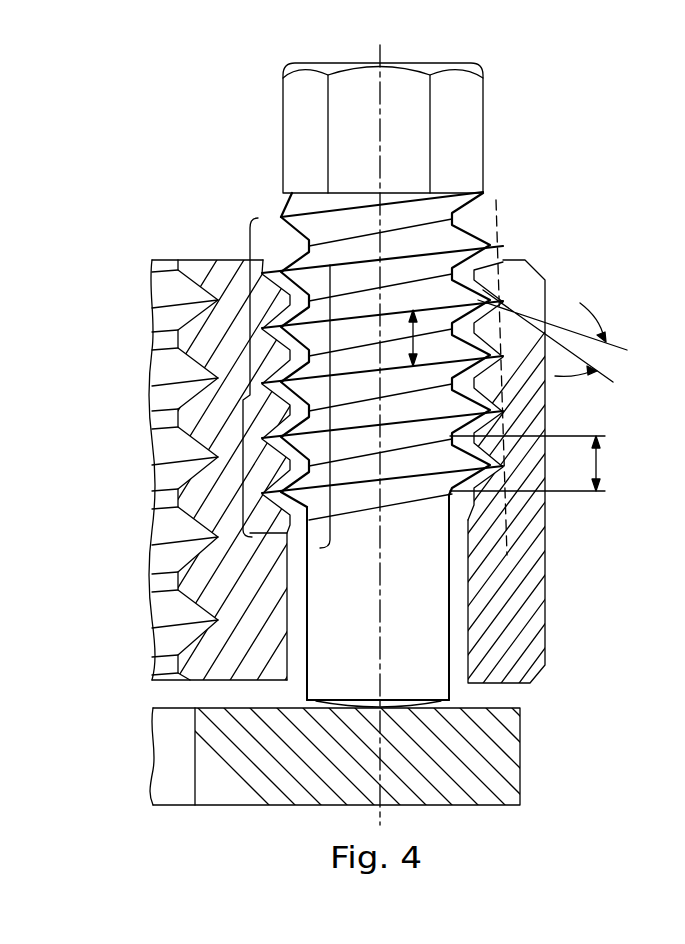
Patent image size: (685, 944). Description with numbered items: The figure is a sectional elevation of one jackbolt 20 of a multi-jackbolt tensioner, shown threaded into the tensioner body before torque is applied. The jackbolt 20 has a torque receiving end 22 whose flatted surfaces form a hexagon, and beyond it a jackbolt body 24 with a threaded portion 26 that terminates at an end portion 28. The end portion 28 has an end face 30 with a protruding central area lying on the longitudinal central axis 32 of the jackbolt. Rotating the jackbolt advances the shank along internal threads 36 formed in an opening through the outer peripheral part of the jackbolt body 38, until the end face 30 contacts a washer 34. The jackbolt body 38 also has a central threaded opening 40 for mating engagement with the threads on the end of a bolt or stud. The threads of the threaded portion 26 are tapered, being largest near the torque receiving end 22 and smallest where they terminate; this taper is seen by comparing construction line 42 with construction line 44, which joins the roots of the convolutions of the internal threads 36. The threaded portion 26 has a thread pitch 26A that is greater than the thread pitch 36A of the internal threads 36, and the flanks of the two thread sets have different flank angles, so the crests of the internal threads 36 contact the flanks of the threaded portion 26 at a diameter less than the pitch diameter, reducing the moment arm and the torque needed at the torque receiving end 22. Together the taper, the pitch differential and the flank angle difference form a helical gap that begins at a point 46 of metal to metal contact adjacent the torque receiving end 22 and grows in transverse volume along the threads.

The jackbolt 20 is at (451, 374).
The torque receiving end 22 is at (478, 128).
The jackbolt body 24 is at (433, 547).
The threaded portion 26 is at (200, 433).
The thread pitch 26A is at (409, 322).
The end portion 28 is at (358, 665).
The end face 30 is at (450, 704).
The longitudinal central axis 32 is at (376, 613).
The washer 34 is at (508, 772).
The internal threads 36 is at (313, 410).
The thread pitch 36A is at (597, 492).
The jackbolt body 38 is at (482, 441).
The central threaded opening 40 is at (287, 449).
The construction line 42 is at (497, 216).
The construction line 44 is at (505, 242).
The point of metal to metal contact 46 is at (214, 262).